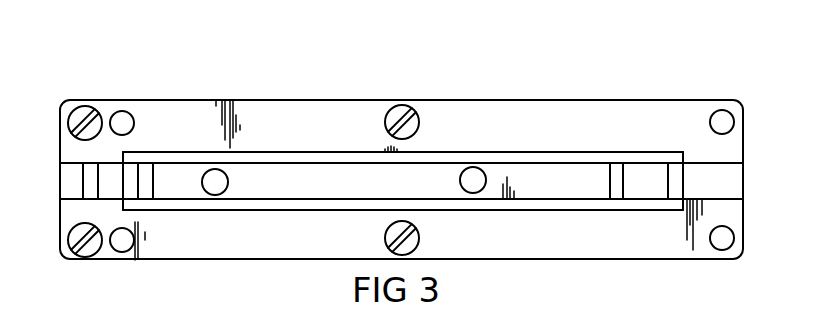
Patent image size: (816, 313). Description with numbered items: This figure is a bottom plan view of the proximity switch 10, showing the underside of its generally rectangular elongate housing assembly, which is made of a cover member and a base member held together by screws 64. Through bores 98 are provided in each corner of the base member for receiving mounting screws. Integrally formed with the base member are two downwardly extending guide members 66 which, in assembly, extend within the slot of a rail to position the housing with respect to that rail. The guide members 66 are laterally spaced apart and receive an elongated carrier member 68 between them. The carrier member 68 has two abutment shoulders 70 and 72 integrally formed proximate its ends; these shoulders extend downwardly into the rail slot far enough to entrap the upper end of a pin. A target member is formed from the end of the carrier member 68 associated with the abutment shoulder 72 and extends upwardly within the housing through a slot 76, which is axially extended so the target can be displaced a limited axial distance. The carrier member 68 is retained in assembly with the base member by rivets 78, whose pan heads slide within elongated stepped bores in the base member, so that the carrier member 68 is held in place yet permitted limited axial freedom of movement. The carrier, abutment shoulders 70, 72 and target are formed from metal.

The proximity switch 10 is at (296, 88).
The screws 64 is at (84, 112).
The guide members 66 is at (566, 152).
The carrier member 68 is at (274, 208).
The abutment shoulder 70 is at (618, 185).
The abutment shoulder 72 is at (147, 185).
The slot 76 is at (92, 180).
The rivets 78 is at (214, 170).
The through bores 98 is at (718, 113).